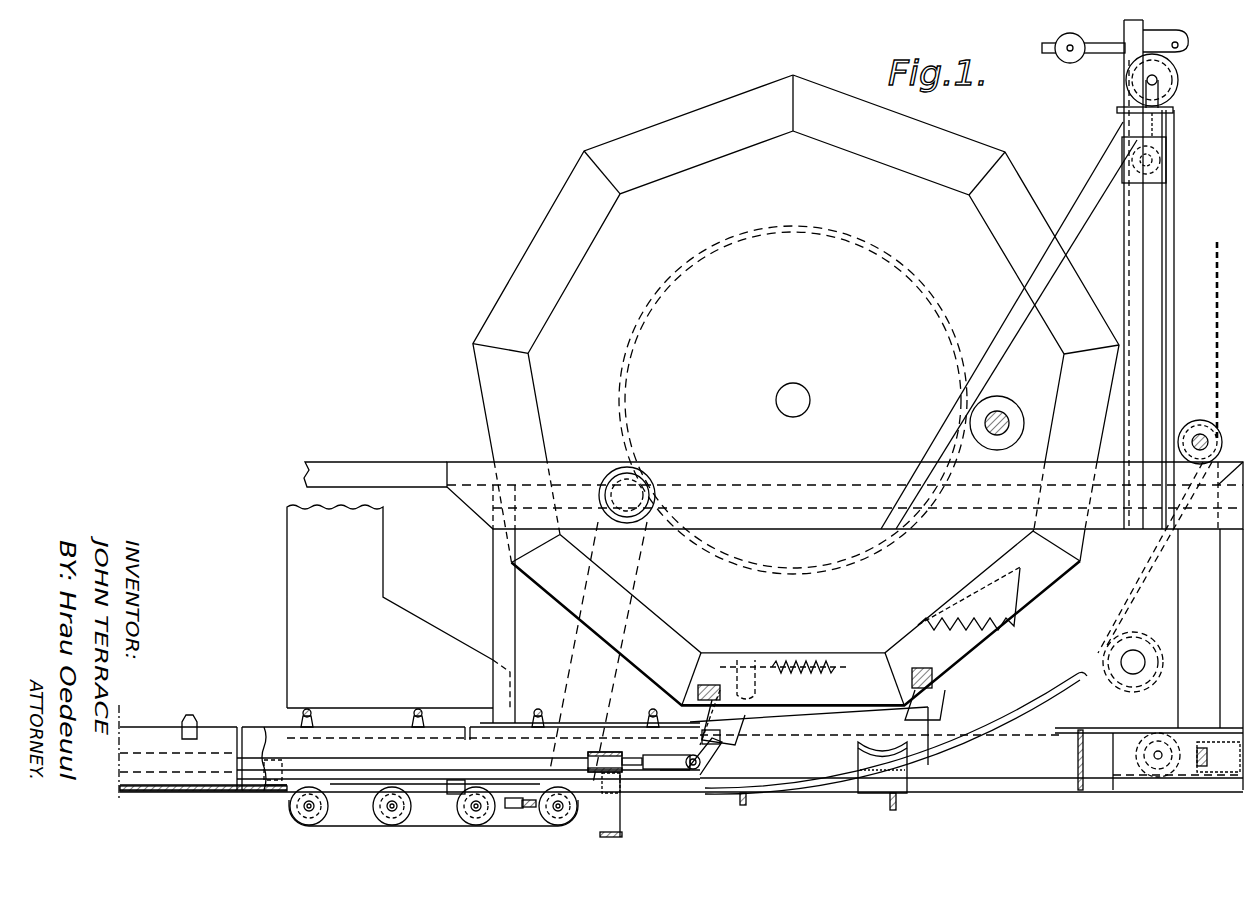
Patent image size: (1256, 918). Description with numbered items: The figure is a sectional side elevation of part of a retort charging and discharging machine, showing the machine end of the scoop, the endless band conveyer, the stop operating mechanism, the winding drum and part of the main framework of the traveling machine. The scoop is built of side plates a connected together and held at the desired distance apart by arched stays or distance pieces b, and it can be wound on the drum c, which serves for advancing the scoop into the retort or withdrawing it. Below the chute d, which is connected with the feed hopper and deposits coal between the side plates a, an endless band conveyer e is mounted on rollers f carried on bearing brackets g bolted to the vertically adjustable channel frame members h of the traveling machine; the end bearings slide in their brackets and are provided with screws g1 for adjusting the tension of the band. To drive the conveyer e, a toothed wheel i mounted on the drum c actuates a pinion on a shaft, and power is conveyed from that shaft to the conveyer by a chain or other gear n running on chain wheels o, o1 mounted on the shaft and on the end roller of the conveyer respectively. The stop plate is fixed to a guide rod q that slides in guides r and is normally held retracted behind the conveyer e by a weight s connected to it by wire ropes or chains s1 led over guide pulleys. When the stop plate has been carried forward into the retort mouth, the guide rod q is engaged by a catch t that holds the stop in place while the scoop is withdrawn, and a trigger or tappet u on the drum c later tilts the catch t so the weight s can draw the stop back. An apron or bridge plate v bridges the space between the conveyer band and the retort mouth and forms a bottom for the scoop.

The side plates a is at (681, 631).
The arched stays or distance pieces b is at (190, 714).
The drum c is at (796, 390).
The chute d is at (493, 614).
The endless band conveyer e is at (433, 805).
The rollers f is at (296, 812).
The bearing brackets g is at (376, 810).
The screws g1 is at (530, 800).
The vertically adjustable channel frame members h is at (503, 795).
The toothed wheel i is at (627, 356).
The chain or other gear n is at (636, 568).
The chain wheel o is at (627, 515).
The chain wheel o1 is at (605, 805).
The guide rod q is at (272, 775).
The guides r is at (600, 755).
The weight s is at (1166, 165).
The wire ropes or chains s1 is at (995, 805).
The catch t is at (693, 772).
The trigger or tappet u is at (700, 690).
The apron or bridge plate v is at (158, 792).